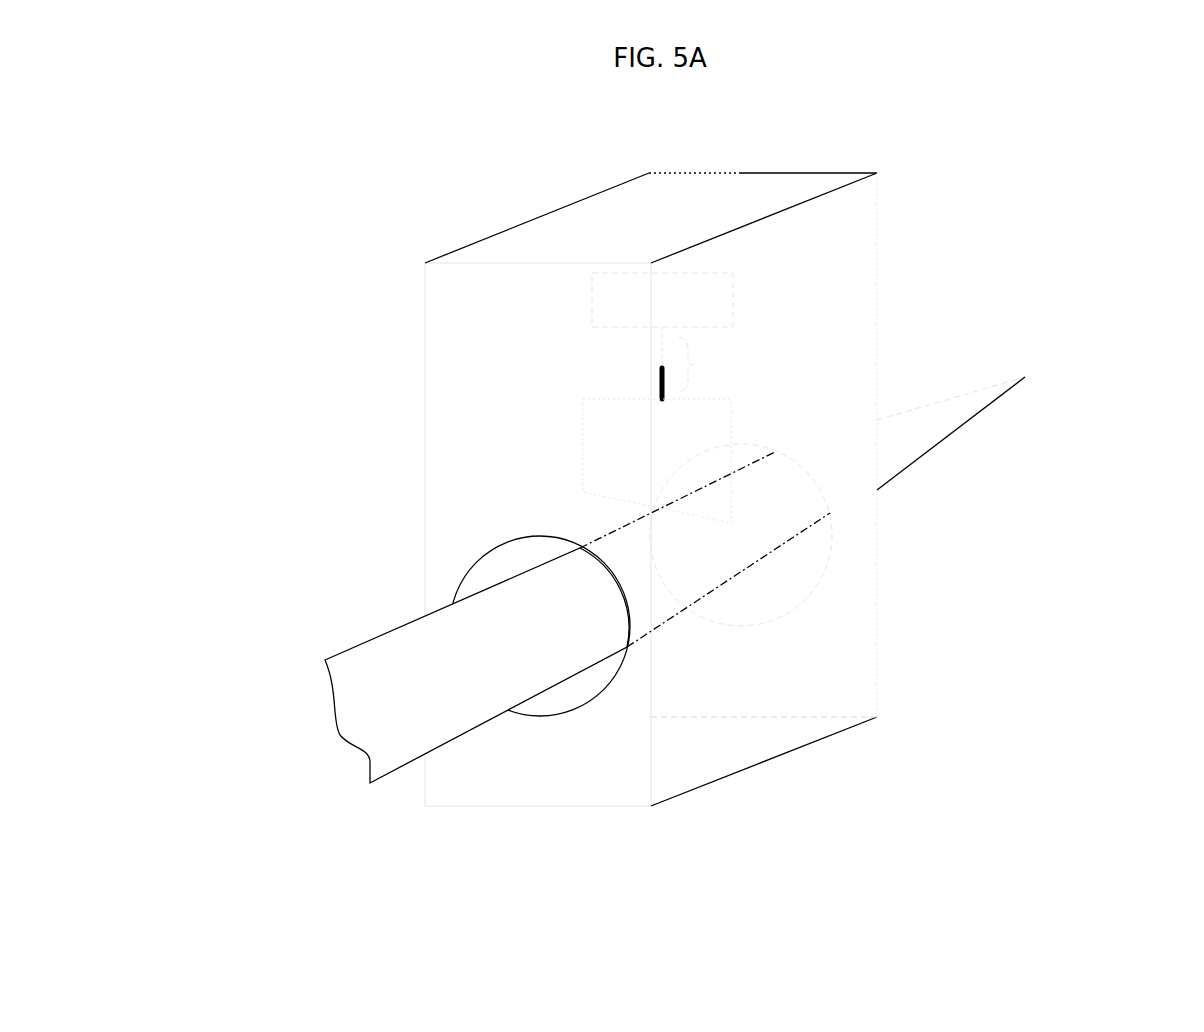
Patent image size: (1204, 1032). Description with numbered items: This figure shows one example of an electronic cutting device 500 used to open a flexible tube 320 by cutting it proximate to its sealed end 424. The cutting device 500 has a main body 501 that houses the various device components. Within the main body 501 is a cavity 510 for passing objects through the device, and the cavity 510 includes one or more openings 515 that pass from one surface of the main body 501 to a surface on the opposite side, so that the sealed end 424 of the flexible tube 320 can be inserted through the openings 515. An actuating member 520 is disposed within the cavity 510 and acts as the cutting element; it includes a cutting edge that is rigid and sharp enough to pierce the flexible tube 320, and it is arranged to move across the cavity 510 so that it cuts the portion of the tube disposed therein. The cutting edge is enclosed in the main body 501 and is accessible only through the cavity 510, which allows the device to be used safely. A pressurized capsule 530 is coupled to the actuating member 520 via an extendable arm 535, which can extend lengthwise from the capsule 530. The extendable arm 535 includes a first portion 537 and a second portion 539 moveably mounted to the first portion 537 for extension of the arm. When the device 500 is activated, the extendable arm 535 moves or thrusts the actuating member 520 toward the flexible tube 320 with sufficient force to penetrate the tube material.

The cutting device 500 is at (1143, 74).
The main body 501 is at (740, 173).
The pressurized capsule 530 is at (590, 298).
The first portion 537 is at (660, 352).
The second portion 539 is at (658, 382).
The extendable arm 535 is at (693, 365).
The actuating member 520 is at (583, 442).
The openings 515 is at (597, 672).
The flexible tube 320 is at (373, 638).
The sealed end 424 is at (997, 397).
The cavity 510 is at (590, 700).